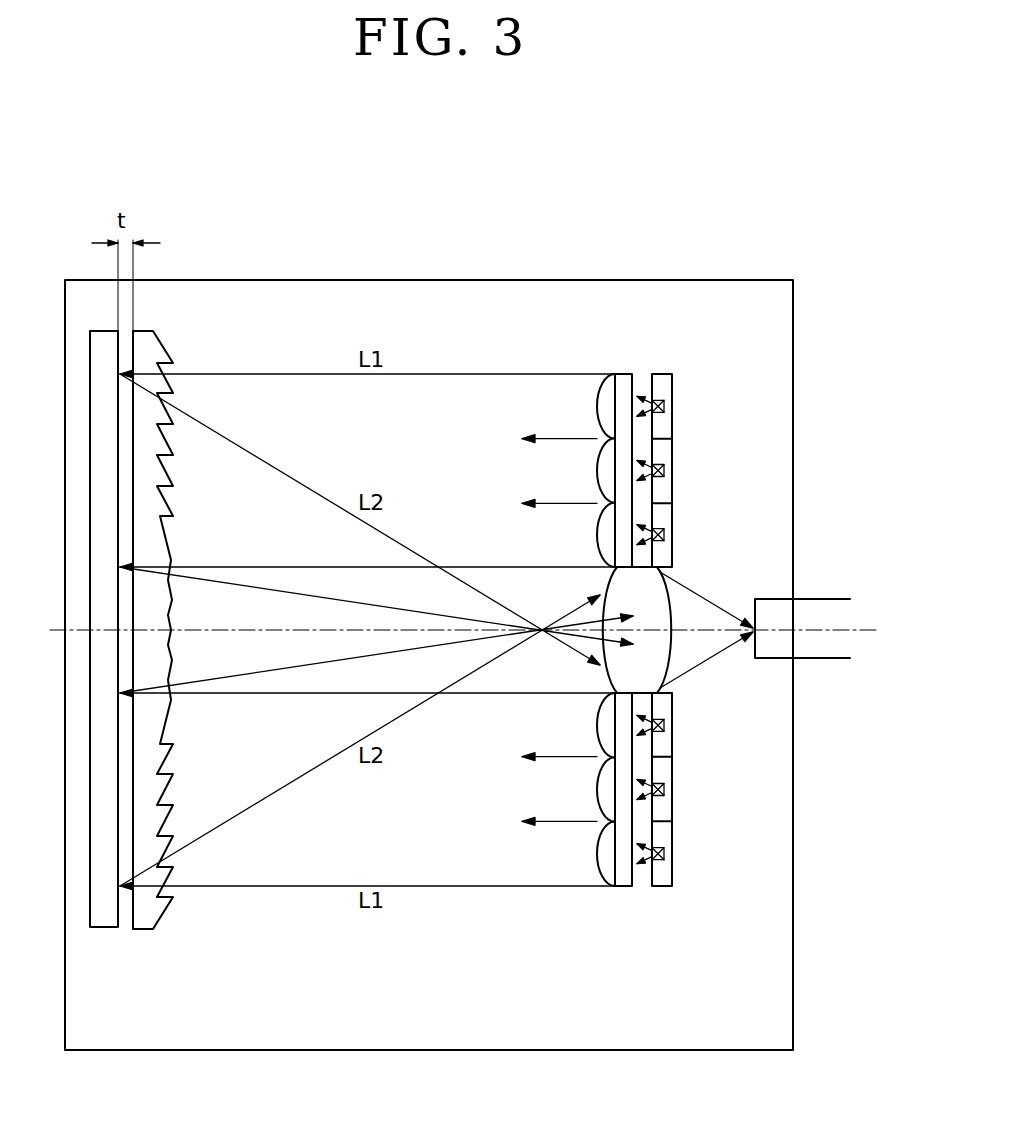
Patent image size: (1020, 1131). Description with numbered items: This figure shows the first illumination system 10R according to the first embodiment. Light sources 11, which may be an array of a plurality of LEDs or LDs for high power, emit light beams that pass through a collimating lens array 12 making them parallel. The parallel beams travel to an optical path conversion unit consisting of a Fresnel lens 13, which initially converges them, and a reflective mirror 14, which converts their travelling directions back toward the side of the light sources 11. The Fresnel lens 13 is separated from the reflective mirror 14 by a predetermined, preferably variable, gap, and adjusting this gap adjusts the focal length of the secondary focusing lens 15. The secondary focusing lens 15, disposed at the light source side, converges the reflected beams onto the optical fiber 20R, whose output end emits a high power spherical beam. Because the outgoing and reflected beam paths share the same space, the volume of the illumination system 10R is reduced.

The first illumination system 10R is at (793, 367).
The optical fiber 20R is at (825, 598).
The light sources 11 is at (658, 886).
The collimating lens array 12 is at (622, 886).
The Fresnel lens 13 is at (152, 927).
The reflective mirror 14 is at (106, 927).
The secondary focusing lens 15 is at (658, 655).